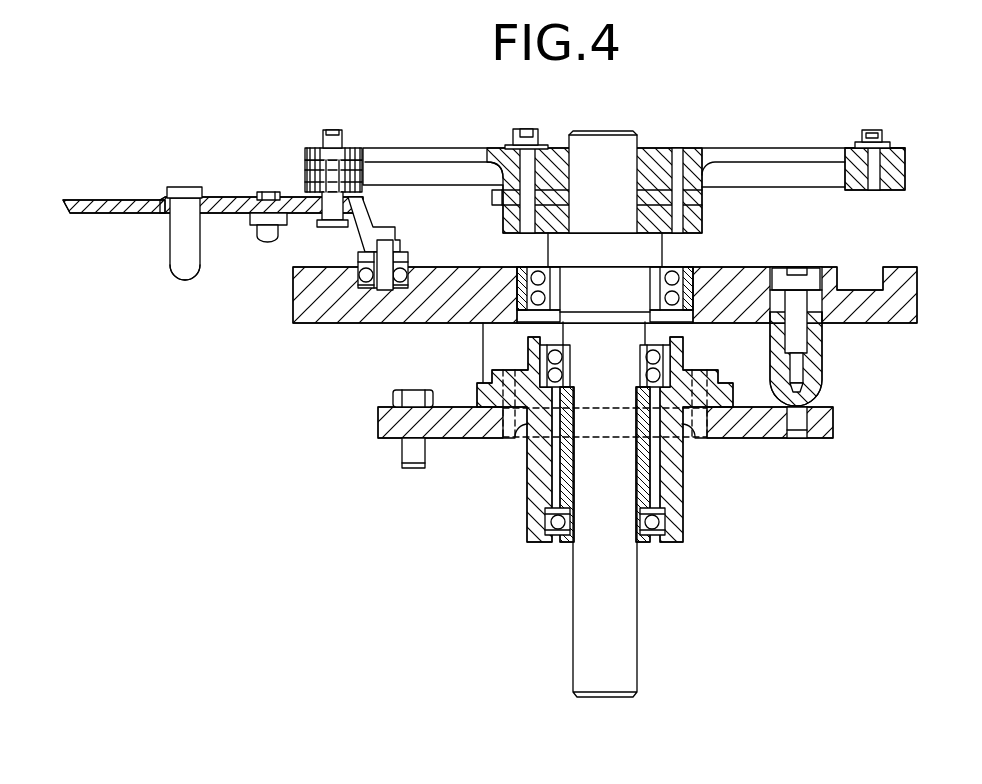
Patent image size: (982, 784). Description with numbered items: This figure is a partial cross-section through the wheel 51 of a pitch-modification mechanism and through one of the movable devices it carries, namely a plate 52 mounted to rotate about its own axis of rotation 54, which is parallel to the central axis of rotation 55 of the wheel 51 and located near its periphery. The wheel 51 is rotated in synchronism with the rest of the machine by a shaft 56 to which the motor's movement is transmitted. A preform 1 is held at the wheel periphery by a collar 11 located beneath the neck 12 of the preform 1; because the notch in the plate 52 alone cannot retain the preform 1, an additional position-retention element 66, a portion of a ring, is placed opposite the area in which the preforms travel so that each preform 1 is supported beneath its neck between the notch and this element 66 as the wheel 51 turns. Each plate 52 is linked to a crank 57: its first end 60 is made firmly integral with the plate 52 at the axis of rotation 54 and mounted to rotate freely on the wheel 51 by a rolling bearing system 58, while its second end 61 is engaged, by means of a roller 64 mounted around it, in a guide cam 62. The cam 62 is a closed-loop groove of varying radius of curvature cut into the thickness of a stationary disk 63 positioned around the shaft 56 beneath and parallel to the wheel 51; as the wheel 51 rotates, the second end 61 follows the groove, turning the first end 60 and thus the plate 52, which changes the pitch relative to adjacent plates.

The preform 1 is at (193, 270).
The collar 11 is at (160, 200).
The neck 12 is at (190, 187).
The wheel 51 is at (472, 153).
The movable device 52 is at (237, 200).
The axis of rotation 54 is at (337, 131).
The central axis of rotation 55 is at (605, 130).
The shaft 56 is at (617, 617).
The crank 57 is at (366, 210).
The rolling bearing system 58 is at (352, 146).
The first end 60 is at (338, 163).
The second end 61 is at (383, 267).
The guide cam 62 is at (370, 293).
The disk 63 is at (317, 310).
The roller 64 is at (378, 265).
The additional position-retention element 66 is at (102, 214).